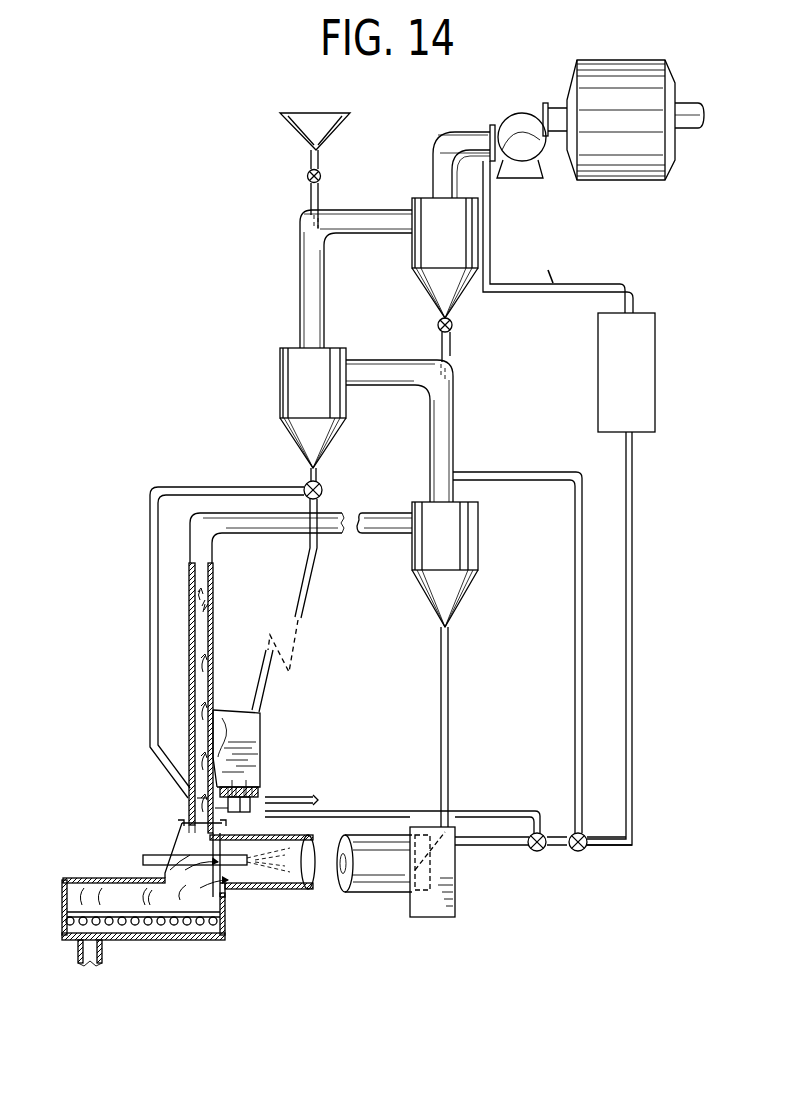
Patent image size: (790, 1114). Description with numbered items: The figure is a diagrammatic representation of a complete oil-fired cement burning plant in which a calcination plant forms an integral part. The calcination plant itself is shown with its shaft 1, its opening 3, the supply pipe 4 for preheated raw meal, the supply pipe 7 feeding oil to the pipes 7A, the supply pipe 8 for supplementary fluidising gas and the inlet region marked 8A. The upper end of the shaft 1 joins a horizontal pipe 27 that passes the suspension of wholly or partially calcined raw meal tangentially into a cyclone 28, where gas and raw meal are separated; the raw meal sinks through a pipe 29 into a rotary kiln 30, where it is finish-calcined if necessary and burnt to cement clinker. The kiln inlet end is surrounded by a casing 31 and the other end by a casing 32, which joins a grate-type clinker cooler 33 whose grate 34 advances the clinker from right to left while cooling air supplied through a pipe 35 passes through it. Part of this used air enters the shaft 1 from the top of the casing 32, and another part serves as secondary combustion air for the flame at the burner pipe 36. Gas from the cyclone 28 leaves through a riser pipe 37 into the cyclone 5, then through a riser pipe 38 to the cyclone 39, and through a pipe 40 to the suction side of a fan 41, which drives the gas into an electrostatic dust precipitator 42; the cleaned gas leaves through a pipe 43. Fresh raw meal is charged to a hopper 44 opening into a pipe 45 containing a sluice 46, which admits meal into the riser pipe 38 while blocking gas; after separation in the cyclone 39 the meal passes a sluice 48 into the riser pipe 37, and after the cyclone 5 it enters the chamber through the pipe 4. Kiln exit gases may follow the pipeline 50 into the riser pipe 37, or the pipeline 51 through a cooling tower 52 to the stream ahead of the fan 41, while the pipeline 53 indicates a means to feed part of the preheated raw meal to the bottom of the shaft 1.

The shaft 1 is at (216, 612).
The opening 3 is at (213, 720).
The supply pipe 4 is at (302, 580).
The cyclone 5 is at (295, 390).
The supply pipe 7 is at (312, 801).
The pipes 7A is at (253, 805).
The supply pipe 8 is at (373, 812).
The gas inlet 8A is at (228, 808).
The horizontal pipe 27 is at (282, 523).
The cyclone 28 is at (455, 540).
The pipe 29 is at (449, 690).
The rotary kiln 30 is at (382, 873).
The casing 31 is at (432, 905).
The casing 32 is at (175, 838).
The clinker cooler 33 is at (208, 947).
The grate 34 is at (157, 918).
The pipe 35 is at (78, 950).
The burner pipe 36 is at (240, 866).
The riser pipe 37 is at (453, 420).
The riser pipe 38 is at (300, 298).
The cyclone 39 is at (440, 290).
The pipe 40 is at (433, 170).
The fan 41 is at (525, 130).
The electrostatic dust precipitator 42 is at (617, 166).
The pipe 43 is at (688, 108).
The hopper 44 is at (338, 122).
The pipe 45 is at (311, 200).
The sluice 46 is at (308, 172).
The sluice 48 is at (453, 325).
The pipeline 50 is at (575, 610).
The pipeline 51 is at (632, 600).
The cooling tower 52 is at (640, 370).
The pipeline 53 is at (150, 545).